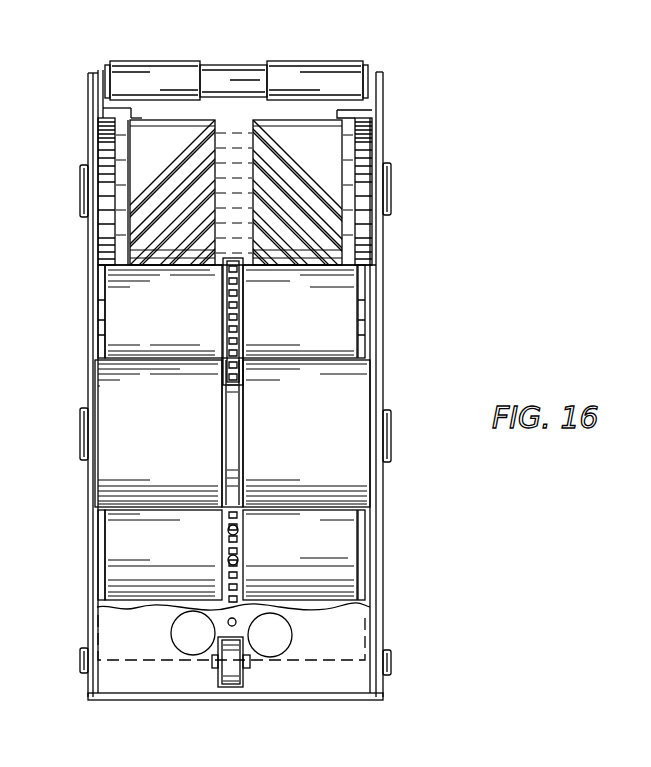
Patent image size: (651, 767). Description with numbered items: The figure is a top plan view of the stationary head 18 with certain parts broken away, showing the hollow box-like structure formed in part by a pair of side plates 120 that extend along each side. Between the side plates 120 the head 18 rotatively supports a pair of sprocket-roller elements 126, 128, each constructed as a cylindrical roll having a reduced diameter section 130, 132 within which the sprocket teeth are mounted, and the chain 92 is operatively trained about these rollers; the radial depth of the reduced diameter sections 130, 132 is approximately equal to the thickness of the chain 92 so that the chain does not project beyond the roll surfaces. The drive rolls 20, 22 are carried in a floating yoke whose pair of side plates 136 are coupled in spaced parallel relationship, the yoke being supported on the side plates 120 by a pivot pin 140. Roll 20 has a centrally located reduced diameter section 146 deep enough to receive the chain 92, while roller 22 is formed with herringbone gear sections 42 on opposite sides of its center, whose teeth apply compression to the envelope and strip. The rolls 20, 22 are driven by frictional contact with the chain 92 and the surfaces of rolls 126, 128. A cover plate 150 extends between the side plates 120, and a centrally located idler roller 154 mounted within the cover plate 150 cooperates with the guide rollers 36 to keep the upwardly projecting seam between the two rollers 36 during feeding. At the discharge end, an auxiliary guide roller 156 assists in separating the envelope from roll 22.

The stationary head 18 is at (392, 366).
The drive roll 20 is at (178, 446).
The roller 22 is at (365, 148).
The guide rollers 36 is at (170, 638).
The herringbone gear section 42 is at (114, 144).
The chain 92 is at (243, 342).
The side plates 120 is at (101, 293).
The sprocket-roller element 126 is at (192, 552).
The sprocket-roller element 128 is at (178, 327).
The reduced diameter section 130 is at (304, 555).
The reduced diameter section 132 is at (243, 318).
The side plates 136 is at (88, 543).
The pivot pin 140 is at (391, 659).
The reduced diameter section 146 is at (233, 432).
The cover plate 150 is at (318, 657).
The idler roller 154 is at (237, 684).
The auxiliary guide roller 156 is at (233, 67).